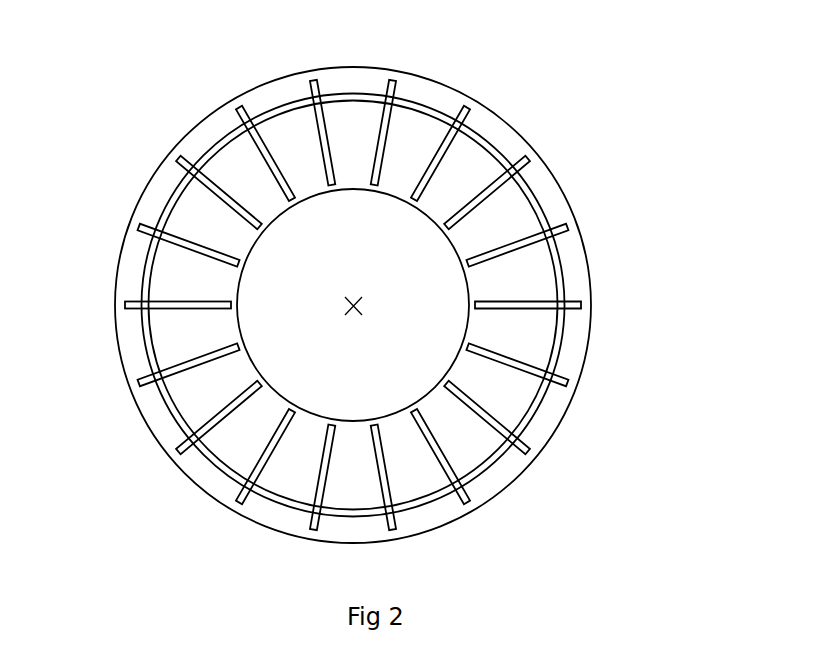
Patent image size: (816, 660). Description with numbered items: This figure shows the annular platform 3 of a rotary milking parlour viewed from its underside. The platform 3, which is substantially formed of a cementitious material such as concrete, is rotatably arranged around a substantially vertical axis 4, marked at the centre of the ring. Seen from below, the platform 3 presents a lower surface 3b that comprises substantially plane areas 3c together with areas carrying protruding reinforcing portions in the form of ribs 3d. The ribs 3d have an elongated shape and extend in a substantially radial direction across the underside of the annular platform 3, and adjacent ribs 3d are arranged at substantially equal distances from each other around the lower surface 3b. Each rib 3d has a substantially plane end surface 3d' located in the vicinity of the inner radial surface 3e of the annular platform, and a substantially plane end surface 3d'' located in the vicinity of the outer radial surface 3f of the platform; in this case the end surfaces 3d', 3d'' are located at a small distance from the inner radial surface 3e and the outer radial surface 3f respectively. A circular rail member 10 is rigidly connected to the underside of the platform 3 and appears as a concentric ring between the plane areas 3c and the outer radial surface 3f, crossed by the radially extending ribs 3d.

The annular platform 3 is at (437, 80).
The lower surface 3b is at (495, 133).
The plane areas 3c is at (547, 185).
The ribs 3d is at (551, 222).
The end surface 3d' is at (467, 289).
The end surface 3d'' is at (606, 286).
The inner radial surface 3e is at (458, 357).
The outer radial surface 3f is at (582, 379).
The vertical axis 4 is at (351, 303).
The circular rail member 10 is at (170, 200).